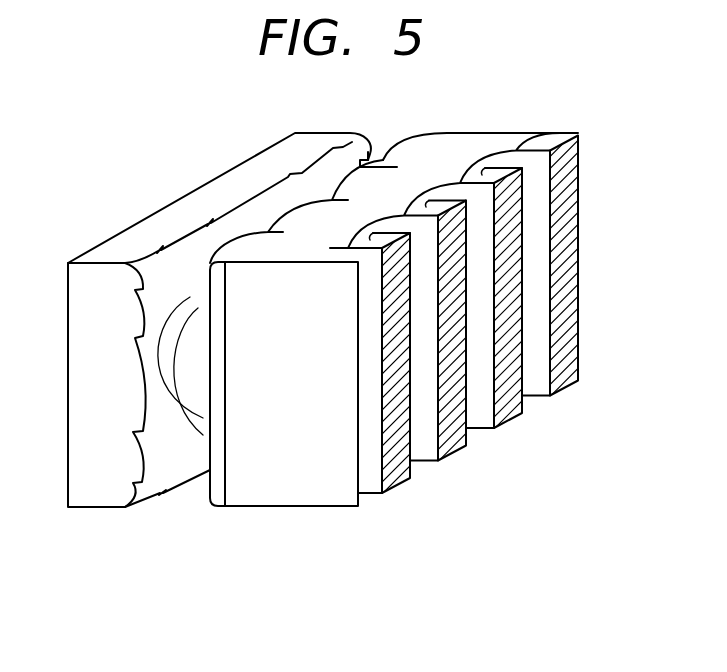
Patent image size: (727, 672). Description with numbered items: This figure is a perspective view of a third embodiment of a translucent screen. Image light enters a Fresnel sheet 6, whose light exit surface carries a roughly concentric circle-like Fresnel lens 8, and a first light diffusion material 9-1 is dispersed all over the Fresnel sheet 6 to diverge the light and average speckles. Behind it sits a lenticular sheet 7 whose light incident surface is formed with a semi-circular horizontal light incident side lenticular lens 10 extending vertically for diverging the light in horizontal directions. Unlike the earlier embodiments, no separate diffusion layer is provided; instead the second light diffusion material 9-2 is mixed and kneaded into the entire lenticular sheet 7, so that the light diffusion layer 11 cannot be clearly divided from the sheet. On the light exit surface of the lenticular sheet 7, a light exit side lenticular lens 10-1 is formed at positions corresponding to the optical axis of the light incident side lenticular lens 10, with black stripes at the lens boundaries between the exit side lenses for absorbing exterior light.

The Fresnel sheet 6 is at (83, 447).
The lenticular sheet 7 is at (478, 145).
The Fresnel lens 8 is at (143, 500).
The first light diffusion material 9-1 is at (235, 182).
The second light diffusion material 9-2 is at (263, 494).
The light incident side lenticular lens 10 is at (375, 162).
The light exit side lenticular lens 10-1 is at (548, 156).
The light diffusion layer 11 is at (570, 270).